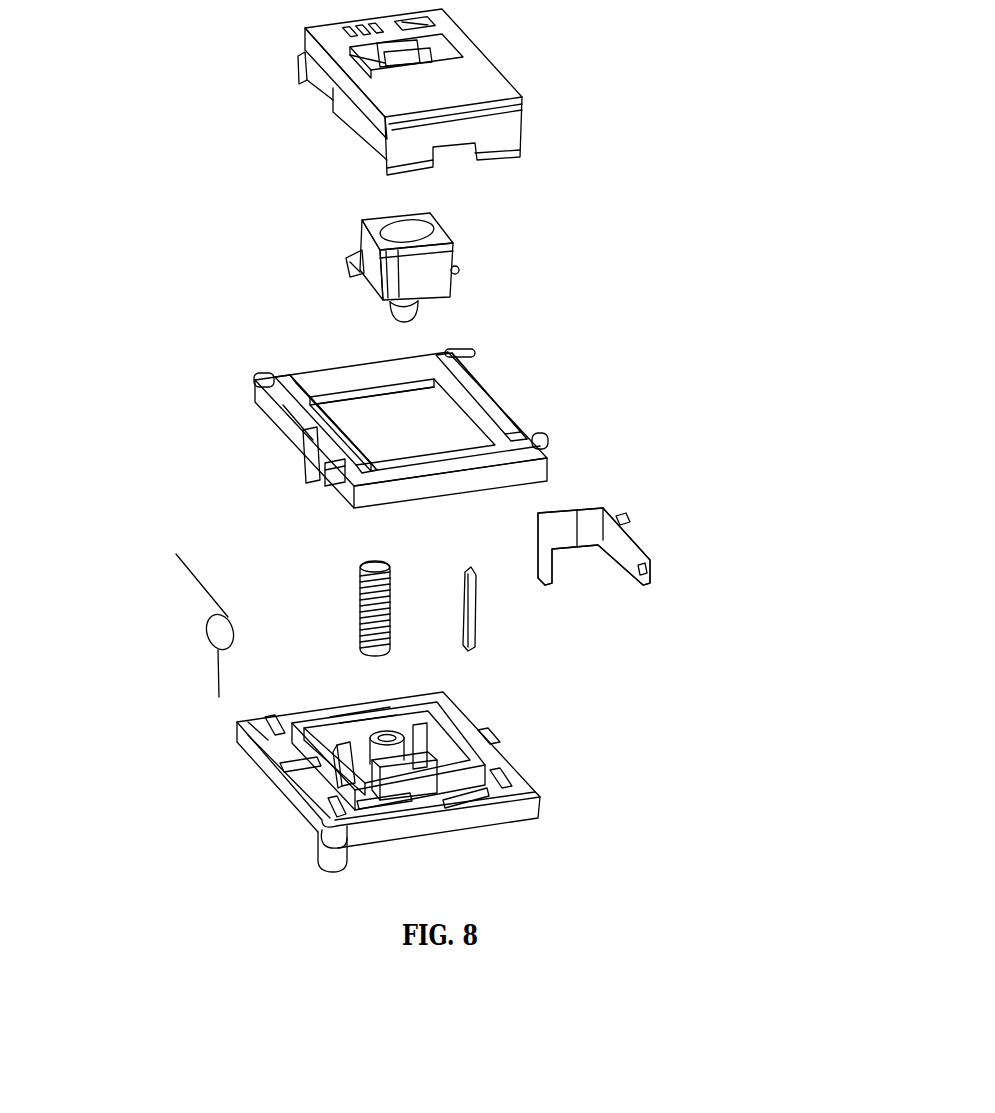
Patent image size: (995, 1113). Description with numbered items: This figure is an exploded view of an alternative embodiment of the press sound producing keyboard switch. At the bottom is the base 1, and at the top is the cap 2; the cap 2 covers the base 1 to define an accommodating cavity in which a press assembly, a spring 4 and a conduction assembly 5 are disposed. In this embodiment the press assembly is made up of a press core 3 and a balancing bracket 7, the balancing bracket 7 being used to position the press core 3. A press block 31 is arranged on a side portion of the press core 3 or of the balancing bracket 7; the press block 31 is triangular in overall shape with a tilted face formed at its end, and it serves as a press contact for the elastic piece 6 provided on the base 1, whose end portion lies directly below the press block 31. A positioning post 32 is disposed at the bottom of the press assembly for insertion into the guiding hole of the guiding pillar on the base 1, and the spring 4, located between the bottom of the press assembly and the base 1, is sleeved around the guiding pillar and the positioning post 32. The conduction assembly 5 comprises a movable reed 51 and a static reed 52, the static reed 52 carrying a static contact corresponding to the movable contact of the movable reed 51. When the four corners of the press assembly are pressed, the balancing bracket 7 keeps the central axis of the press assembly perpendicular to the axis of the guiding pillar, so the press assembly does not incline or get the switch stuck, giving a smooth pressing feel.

The base 1 is at (543, 817).
The cap 2 is at (493, 63).
The press core 3 is at (440, 265).
The press block 31 is at (350, 267).
The positioning post 32 is at (408, 310).
The spring 4 is at (392, 645).
The conduction assembly 5 is at (630, 533).
The movable reed 51 is at (594, 546).
The static reed 52 is at (480, 623).
The elastic piece 6 is at (212, 643).
The balancing bracket 7 is at (520, 420).